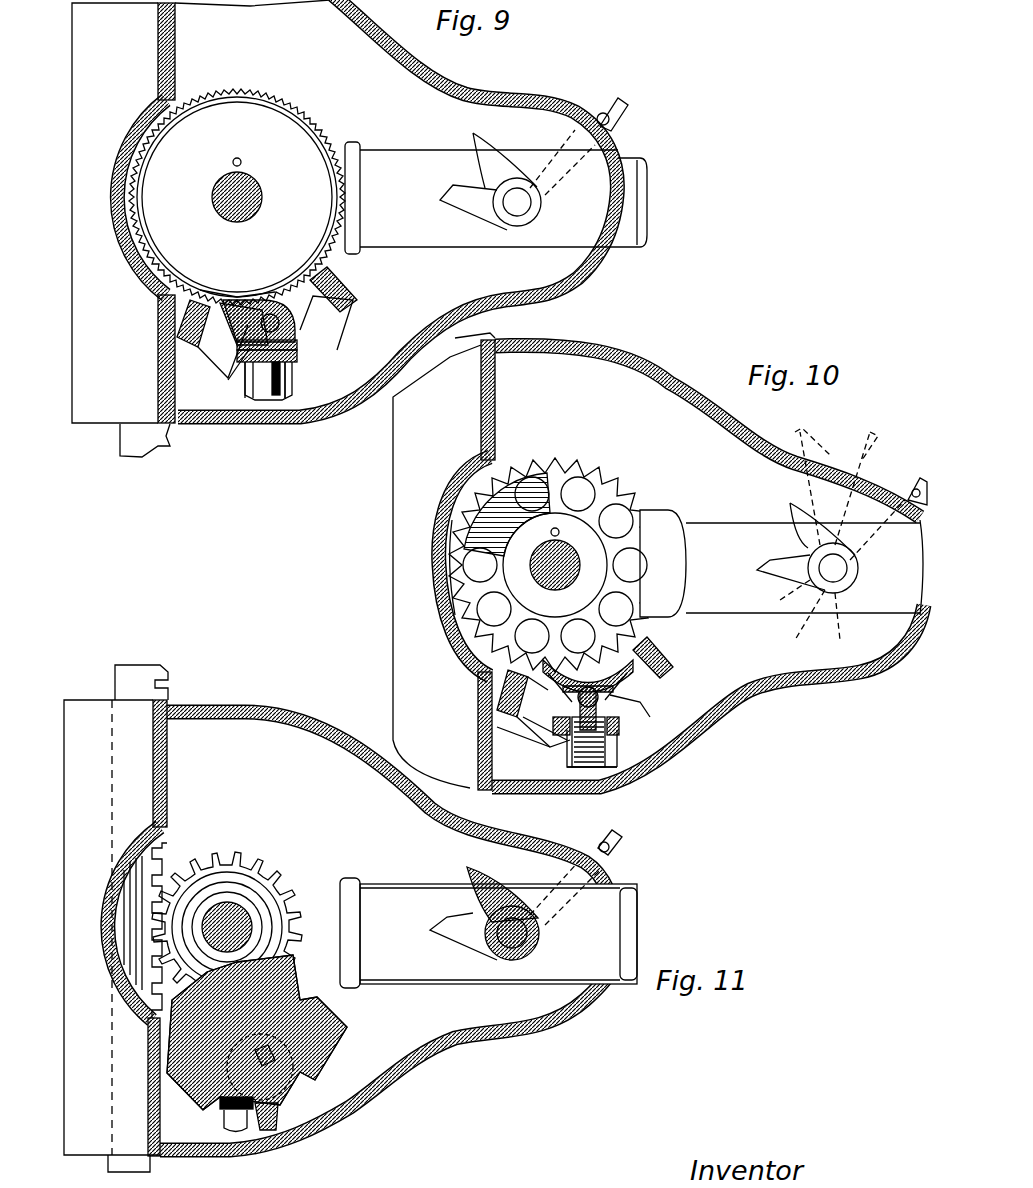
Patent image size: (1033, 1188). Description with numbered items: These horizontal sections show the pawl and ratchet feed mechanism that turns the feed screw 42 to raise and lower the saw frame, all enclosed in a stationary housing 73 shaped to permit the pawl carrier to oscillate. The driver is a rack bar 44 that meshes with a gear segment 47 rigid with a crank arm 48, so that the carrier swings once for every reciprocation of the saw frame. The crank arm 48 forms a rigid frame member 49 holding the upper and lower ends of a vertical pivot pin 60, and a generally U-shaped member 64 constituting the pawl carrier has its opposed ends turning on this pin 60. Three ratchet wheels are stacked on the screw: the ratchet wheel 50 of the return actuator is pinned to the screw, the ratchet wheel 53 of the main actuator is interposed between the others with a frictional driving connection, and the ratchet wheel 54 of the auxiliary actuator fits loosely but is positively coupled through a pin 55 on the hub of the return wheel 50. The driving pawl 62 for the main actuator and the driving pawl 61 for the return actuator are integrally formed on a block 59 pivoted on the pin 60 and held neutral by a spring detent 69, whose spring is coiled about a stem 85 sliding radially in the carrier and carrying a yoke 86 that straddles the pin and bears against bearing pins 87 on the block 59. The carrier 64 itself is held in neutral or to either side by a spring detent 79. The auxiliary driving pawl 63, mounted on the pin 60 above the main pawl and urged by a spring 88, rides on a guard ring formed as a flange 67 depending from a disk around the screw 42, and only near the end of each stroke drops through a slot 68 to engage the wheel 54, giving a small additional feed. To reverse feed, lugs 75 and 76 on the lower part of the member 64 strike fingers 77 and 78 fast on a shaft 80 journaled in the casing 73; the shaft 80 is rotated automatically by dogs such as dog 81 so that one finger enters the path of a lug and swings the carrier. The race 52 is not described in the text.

In FIG. 9, the feed screw 42 is at (257, 187).
In FIG. 10, the feed screw 42 is at (553, 563).
In FIG. 11, the feed screw 42 is at (243, 910).
In FIG. 9, the rack bar 44 is at (142, 445).
In FIG. 10, the rack bar 44 is at (495, 330).
In FIG. 11, the rack bar 44 is at (135, 672).
In FIG. 11, the gear segment 47 is at (198, 887).
In FIG. 9, the crank arm 48 is at (233, 343).
In FIG. 10, the crank arm 48 is at (520, 722).
In FIG. 11, the crank arm 48 is at (170, 1053).
In FIG. 9, the rigid frame member 49 is at (185, 338).
In FIG. 10, the rigid frame member 49 is at (500, 692).
In FIG. 10, the ratchet wheel of the return actuator 50 is at (470, 538).
In FIG. 10, the ball bearing race 52 is at (523, 528).
In FIG. 10, the ratchet wheel of the main actuator 53 is at (453, 610).
In FIG. 9, the ratchet wheel of the auxiliary actuator 54 is at (212, 110).
In FIG. 10, the pin 55 is at (560, 531).
In FIG. 9, the pawl block 59 is at (315, 305).
In FIG. 10, the pawl block 59 is at (610, 690).
In FIG. 9, the pivot pin 60 is at (295, 345).
In FIG. 10, the pivot pin 60 is at (620, 703).
In FIG. 11, the pivot pin 60 is at (280, 1062).
In FIG. 10, the driving pawl for the return actuator 61 is at (635, 665).
In FIG. 10, the driving pawl for the main actuator 62 is at (538, 690).
In FIG. 9, the driving pawl for the auxiliary actuator 63 is at (236, 324).
In FIG. 9, the U-shaped member 64 is at (295, 360).
In FIG. 10, the U-shaped member 64 is at (620, 727).
In FIG. 11, the U-shaped member 64 is at (220, 1105).
In FIG. 9, the flange 67 is at (283, 100).
In FIG. 9, the slot 68 is at (212, 292).
In FIG. 9, the spring detent 69 is at (260, 385).
In FIG. 10, the spring detent 69 is at (617, 760).
In FIG. 9, the stationary housing 73 is at (560, 113).
In FIG. 10, the stationary housing 73 is at (665, 372).
In FIG. 11, the stationary housing 73 is at (252, 707).
In FIG. 9, the lug 75 is at (287, 383).
In FIG. 10, the lug 75 is at (607, 743).
In FIG. 11, the lug 75 is at (273, 1120).
In FIG. 9, the lug 76 is at (240, 380).
In FIG. 10, the lug 76 is at (563, 743).
In FIG. 11, the lug 76 is at (237, 1117).
In FIG. 9, the finger 77 is at (473, 147).
In FIG. 10, the finger 77 is at (807, 525).
In FIG. 11, the finger 77 is at (470, 873).
In FIG. 9, the finger 78 is at (455, 193).
In FIG. 10, the finger 78 is at (767, 560).
In FIG. 11, the finger 78 is at (443, 923).
In FIG. 11, the spring detent 79 is at (293, 1080).
In FIG. 9, the shaft 80 is at (518, 212).
In FIG. 10, the shaft 80 is at (833, 570).
In FIG. 11, the shaft 80 is at (507, 948).
In FIG. 10, the dog 81 is at (572, 745).
In FIG. 10, the stem 85 is at (587, 767).
In FIG. 10, the yoke 86 is at (633, 710).
In FIG. 10, the bearing pins 87 is at (607, 690).
In FIG. 9, the spring 88 is at (248, 325).